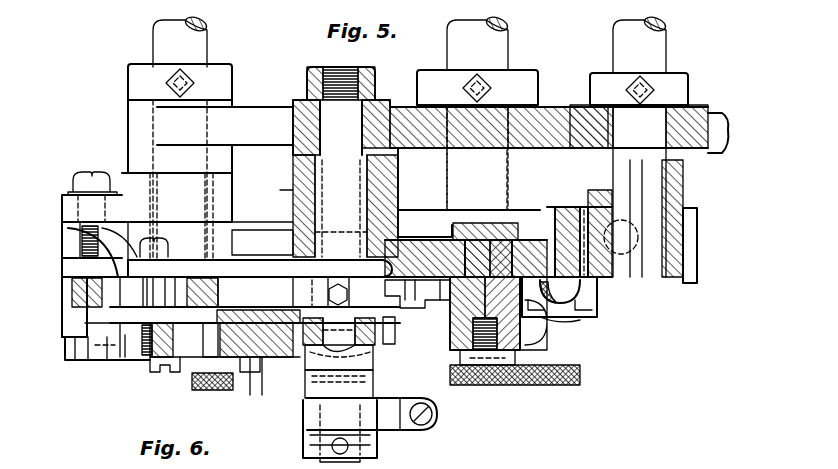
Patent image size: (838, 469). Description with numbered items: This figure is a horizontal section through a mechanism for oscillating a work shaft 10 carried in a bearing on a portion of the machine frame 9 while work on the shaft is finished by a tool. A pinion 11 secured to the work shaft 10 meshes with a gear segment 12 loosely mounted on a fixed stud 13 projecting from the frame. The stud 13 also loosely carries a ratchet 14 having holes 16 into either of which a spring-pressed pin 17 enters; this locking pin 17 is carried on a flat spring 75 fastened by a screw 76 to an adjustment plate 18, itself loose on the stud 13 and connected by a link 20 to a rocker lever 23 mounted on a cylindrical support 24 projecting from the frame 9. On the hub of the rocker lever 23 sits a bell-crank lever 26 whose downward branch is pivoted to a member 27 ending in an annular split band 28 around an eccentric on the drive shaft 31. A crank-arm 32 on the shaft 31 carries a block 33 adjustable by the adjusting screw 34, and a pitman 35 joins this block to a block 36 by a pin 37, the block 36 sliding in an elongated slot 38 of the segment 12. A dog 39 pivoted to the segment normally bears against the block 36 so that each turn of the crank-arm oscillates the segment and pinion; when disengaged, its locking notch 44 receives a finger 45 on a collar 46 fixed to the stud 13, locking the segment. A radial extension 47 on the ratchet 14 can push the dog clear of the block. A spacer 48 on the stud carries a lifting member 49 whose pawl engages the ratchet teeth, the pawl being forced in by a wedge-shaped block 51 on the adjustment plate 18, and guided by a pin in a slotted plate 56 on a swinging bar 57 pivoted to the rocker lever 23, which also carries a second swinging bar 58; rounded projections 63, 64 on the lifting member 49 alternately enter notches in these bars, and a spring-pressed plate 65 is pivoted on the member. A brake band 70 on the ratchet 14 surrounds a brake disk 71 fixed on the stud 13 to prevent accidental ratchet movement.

The machine frame 9 is at (256, 112).
The work shaft 10 is at (654, 185).
The pinion 11 is at (697, 242).
The gear segment 12 is at (562, 208).
The fixed stud 13 is at (353, 125).
The ratchet 14 is at (376, 345).
The holes 16 is at (240, 313).
The spring-pressed pin 17 is at (196, 392).
The adjustment plate 18 is at (185, 362).
The link 20 is at (238, 360).
The rocker lever 23 is at (62, 340).
The cylindrical support 24 is at (160, 42).
The bell-crank lever 26 is at (68, 203).
The member 27 is at (255, 232).
The annular split band 28 is at (424, 212).
The drive shaft 31 is at (503, 53).
The crank-arm 32 is at (600, 312).
The block 33 is at (584, 320).
The adjusting screw 34 is at (582, 300).
The pitman 35 is at (465, 352).
The block 36 is at (455, 320).
The pin 37 is at (452, 372).
The elongated slot 38 is at (462, 224).
The dog 39 is at (418, 300).
The locking notch 44 is at (404, 313).
The finger 45 is at (388, 268).
The collar 46 is at (320, 290).
The radial extension 47 is at (378, 346).
The spacer 48 is at (198, 258).
The lifting member 49 is at (68, 250).
The wedge-shaped block 51 is at (178, 366).
The plate 56 is at (108, 357).
The swinging bar 57 is at (70, 286).
The swinging bar 58 is at (228, 297).
The rounded projection 63 is at (157, 290).
The rounded projection 64 is at (200, 280).
The plate 65 is at (126, 340).
The brake band 70 is at (380, 428).
The brake disk 71 is at (300, 420).
The flat spring 75 is at (248, 372).
The screw 76 is at (262, 398).